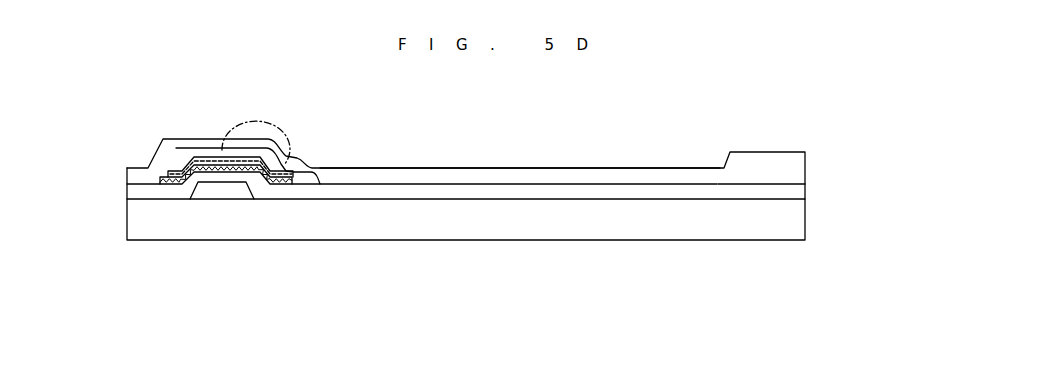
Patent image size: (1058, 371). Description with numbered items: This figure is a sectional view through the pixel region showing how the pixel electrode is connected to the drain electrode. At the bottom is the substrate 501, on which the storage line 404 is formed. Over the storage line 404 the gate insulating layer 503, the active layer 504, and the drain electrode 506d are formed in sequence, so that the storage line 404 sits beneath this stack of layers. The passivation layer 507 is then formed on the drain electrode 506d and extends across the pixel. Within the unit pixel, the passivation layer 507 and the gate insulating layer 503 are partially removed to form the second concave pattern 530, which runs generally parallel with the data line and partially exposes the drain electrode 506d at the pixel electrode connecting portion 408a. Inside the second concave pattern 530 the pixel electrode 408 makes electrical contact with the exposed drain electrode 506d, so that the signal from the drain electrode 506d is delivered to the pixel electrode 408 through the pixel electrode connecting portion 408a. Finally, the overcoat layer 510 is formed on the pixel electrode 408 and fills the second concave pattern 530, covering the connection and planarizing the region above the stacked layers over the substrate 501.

The substrate 501 is at (797, 227).
The gate insulating layer 503 is at (130, 192).
The storage line 404 is at (218, 190).
The active layer 504 is at (202, 171).
The drain electrode 506d is at (183, 157).
The passivation layer 507 is at (129, 174).
The pixel electrode 408 is at (541, 190).
The pixel electrode connecting portion 408a is at (281, 122).
The overcoat layer 510 is at (590, 176).
The second concave pattern 530 is at (465, 151).